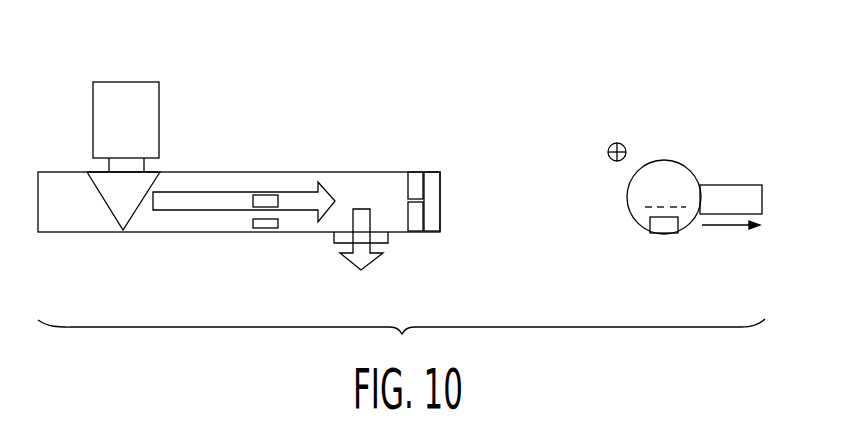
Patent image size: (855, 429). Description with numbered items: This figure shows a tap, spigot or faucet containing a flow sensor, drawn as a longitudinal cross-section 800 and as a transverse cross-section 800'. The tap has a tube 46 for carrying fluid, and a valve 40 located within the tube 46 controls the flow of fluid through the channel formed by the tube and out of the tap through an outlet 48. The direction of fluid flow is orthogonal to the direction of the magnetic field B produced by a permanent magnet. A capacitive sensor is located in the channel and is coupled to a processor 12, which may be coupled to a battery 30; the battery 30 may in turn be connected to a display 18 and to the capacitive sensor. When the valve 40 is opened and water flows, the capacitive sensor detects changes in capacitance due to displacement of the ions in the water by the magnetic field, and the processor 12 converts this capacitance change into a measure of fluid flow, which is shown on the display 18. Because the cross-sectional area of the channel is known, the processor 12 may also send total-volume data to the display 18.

The longitudinal cross-section 800 is at (265, 164).
The transverse cross-section 800' is at (674, 151).
The tube 46 is at (61, 171).
The valve 40 is at (105, 206).
The outlet 48 is at (333, 238).
The processor 12 is at (416, 180).
The battery 30 is at (414, 229).
The display 18 is at (441, 195).